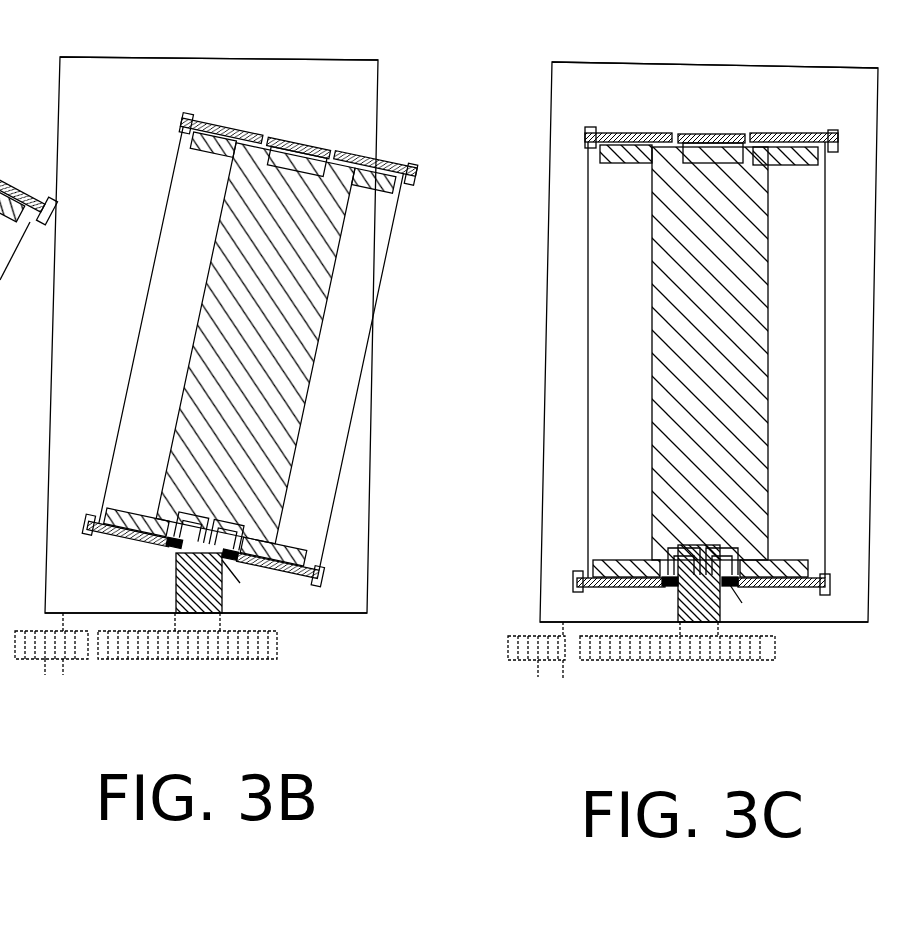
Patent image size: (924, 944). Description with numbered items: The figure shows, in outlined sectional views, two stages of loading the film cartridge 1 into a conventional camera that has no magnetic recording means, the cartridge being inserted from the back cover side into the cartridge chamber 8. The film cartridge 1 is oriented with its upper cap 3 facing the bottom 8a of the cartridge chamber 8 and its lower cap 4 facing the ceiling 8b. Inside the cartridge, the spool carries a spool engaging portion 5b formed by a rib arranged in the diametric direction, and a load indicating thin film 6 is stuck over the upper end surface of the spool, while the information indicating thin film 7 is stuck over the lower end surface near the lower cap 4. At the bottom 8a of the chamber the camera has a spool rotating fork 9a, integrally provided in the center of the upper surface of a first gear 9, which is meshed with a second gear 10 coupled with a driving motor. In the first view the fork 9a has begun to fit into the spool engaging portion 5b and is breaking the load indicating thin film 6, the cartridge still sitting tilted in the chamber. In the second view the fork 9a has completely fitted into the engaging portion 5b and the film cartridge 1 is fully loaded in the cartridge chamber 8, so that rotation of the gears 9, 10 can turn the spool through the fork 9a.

In FIG. 3B, the film cartridge 1 is at (395, 332).
In FIG. 3C, the film cartridge 1 is at (836, 420).
In FIG. 3B, the upper cap 3 is at (313, 585).
In FIG. 3C, the upper cap 3 is at (820, 595).
In FIG. 3B, the lower cap 4 is at (383, 165).
In FIG. 3C, the lower cap 4 is at (782, 134).
In FIG. 3B, the spool engaging portion 5b is at (207, 513).
In FIG. 3C, the spool engaging portion 5b is at (700, 553).
In FIG. 3B, the load indicating thin film 6 is at (228, 566).
In FIG. 3C, the load indicating thin film 6 is at (745, 603).
In FIG. 3B, the information indicating thin film 7 is at (305, 140).
In FIG. 3C, the information indicating thin film 7 is at (710, 134).
In FIG. 3B, the cartridge chamber 8 is at (186, 46).
In FIG. 3C, the cartridge chamber 8 is at (632, 58).
In FIG. 3B, the bottom of cartridge chamber 8a is at (290, 613).
In FIG. 3C, the bottom of cartridge chamber 8a is at (800, 618).
In FIG. 3B, the ceiling of cartridge chamber 8b is at (268, 64).
In FIG. 3C, the ceiling of cartridge chamber 8b is at (770, 74).
In FIG. 3B, the first gear 9 is at (197, 659).
In FIG. 3C, the first gear 9 is at (688, 660).
In FIG. 3B, the spool rotating fork 9a is at (176, 587).
In FIG. 3C, the spool rotating fork 9a is at (678, 582).
In FIG. 3B, the second gear 10 is at (48, 672).
In FIG. 3C, the second gear 10 is at (537, 677).